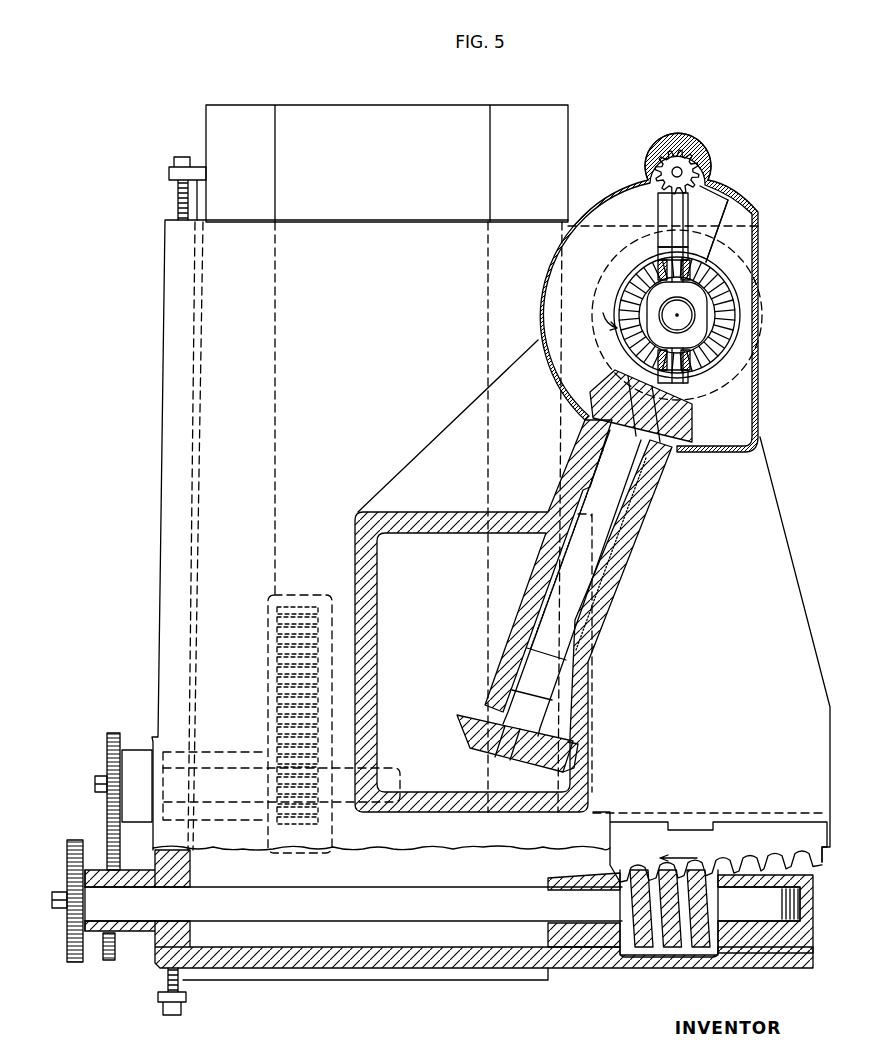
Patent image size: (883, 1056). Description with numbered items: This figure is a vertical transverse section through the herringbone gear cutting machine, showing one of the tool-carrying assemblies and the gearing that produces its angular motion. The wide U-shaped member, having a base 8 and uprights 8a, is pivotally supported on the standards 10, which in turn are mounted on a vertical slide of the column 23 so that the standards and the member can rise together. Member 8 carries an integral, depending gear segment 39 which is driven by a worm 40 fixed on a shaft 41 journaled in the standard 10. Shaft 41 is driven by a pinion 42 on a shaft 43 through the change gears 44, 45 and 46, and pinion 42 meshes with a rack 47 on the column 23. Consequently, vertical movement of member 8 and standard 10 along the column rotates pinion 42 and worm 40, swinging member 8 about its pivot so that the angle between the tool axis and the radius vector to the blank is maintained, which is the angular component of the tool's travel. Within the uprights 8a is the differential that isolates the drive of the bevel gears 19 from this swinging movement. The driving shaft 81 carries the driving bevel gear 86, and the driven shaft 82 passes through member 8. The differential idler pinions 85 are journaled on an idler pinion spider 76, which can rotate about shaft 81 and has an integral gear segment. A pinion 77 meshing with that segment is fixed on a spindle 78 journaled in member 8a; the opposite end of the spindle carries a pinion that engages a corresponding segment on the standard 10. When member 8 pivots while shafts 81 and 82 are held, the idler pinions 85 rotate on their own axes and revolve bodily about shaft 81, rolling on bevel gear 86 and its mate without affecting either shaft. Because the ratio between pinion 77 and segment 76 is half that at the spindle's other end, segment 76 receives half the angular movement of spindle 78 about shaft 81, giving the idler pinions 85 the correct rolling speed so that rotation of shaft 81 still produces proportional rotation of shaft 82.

The base 8 is at (373, 630).
The uprights 8a is at (594, 497).
The standards 10 is at (162, 463).
The bevel gears 19 is at (536, 766).
The column 23 is at (387, 163).
The gear segment 39 is at (710, 847).
The worm 40 is at (660, 927).
The shaft 41 is at (425, 927).
The pinion 42 is at (278, 780).
The shaft 43 is at (212, 770).
The change gear 44 is at (113, 733).
The change gear 45 is at (112, 962).
The change gear 46 is at (73, 966).
The rack 47 is at (307, 613).
The idler pinion spider 76 is at (712, 213).
The pinion 77 is at (700, 163).
The spindle 78 is at (680, 168).
The driving shaft 81 is at (685, 312).
The driven shaft 82 is at (615, 480).
The differential idler pinion 85 is at (697, 267).
The driving bevel gear 86 is at (723, 337).